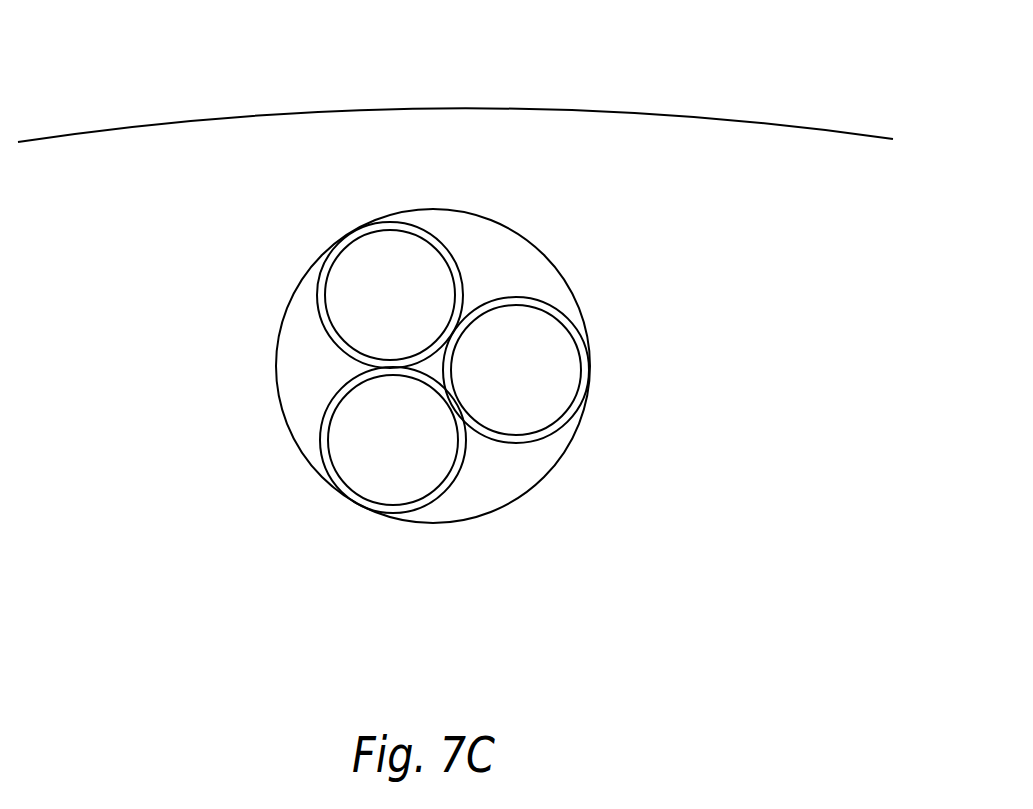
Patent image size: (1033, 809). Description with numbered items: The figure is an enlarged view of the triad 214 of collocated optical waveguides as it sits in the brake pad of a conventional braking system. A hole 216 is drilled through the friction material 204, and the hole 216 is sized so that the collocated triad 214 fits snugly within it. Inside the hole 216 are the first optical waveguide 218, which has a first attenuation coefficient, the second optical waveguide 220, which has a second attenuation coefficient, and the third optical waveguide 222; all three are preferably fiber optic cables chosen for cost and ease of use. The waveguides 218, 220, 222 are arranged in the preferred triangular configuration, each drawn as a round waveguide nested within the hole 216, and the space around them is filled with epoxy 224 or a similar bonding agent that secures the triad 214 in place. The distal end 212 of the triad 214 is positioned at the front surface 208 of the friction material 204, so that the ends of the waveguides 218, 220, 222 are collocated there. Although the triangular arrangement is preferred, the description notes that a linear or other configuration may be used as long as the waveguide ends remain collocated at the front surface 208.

The friction material 204 is at (642, 148).
The front surface 208 is at (134, 233).
The distal end 212 is at (587, 287).
The triad 214 is at (308, 393).
The hole 216 is at (460, 525).
The first optical waveguide 218 is at (563, 423).
The second optical waveguide 220 is at (322, 458).
The third optical waveguide 222 is at (320, 277).
The epoxy 224 is at (307, 342).